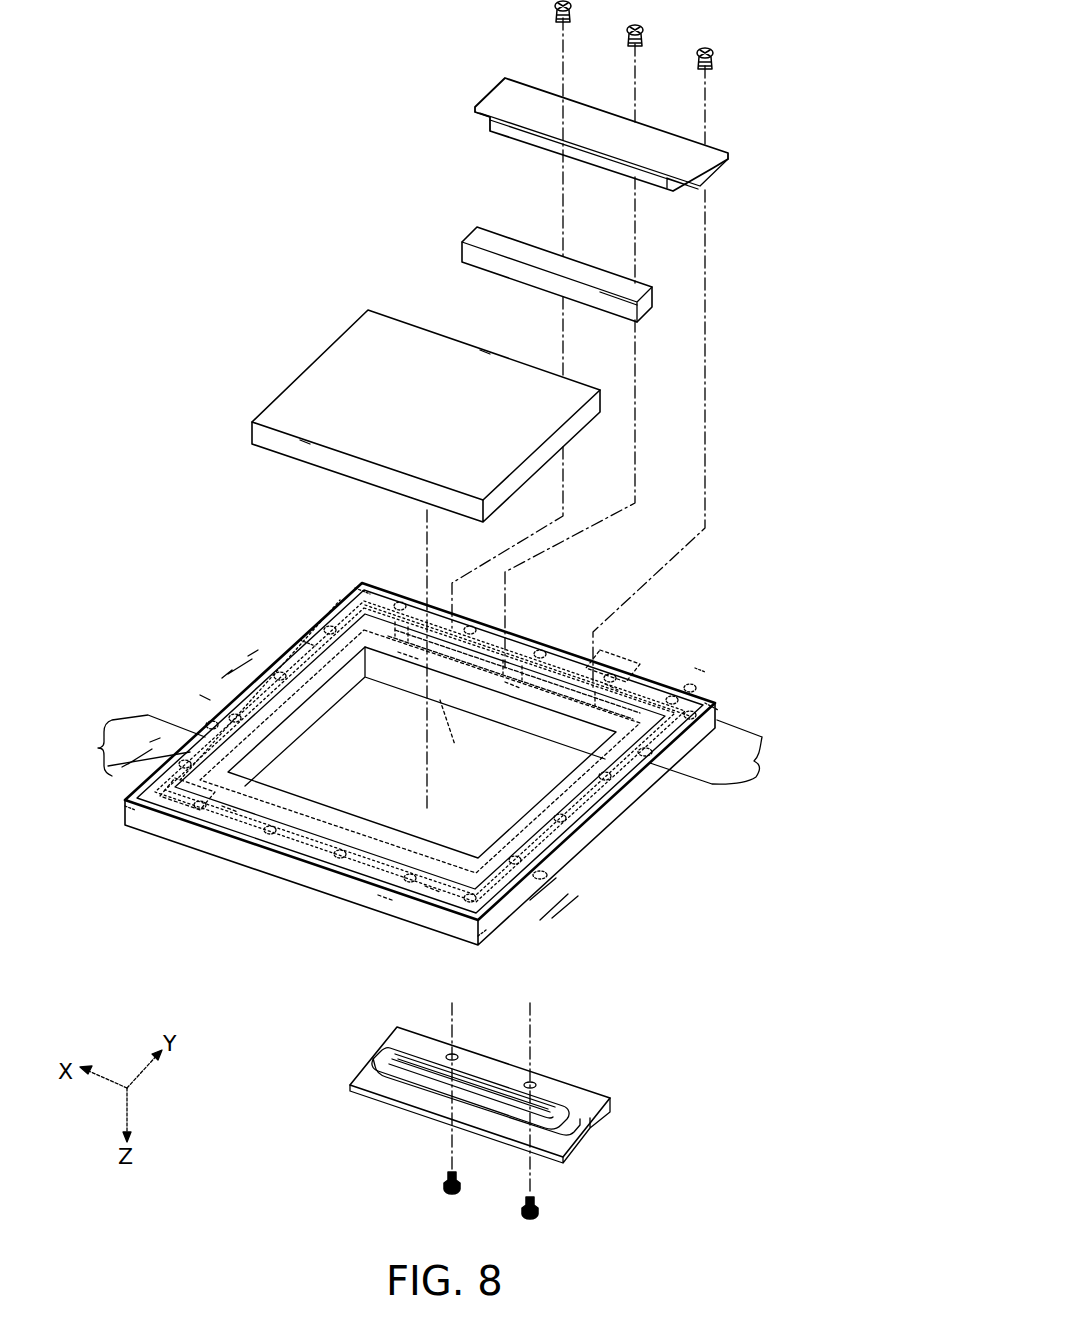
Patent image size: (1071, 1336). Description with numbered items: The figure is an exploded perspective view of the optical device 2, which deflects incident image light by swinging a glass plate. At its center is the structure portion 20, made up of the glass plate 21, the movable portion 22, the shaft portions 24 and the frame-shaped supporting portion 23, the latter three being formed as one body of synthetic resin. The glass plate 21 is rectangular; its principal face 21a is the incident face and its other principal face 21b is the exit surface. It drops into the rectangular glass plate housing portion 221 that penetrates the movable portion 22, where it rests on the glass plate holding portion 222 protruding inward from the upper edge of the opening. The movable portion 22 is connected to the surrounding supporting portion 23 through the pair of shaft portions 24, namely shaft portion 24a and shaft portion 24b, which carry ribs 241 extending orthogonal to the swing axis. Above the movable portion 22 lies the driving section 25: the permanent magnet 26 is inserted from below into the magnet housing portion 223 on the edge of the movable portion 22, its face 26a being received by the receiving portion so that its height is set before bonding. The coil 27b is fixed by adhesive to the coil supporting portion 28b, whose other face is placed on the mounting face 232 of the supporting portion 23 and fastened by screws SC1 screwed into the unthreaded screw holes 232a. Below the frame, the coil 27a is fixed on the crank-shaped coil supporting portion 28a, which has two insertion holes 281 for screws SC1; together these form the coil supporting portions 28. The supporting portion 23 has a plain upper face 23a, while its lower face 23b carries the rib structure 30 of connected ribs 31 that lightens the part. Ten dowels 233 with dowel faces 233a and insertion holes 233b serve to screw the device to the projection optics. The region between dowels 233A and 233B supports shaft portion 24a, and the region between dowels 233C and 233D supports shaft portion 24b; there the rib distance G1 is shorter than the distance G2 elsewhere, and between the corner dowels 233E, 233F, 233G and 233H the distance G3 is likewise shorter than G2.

The optical device 2 is at (219, 202).
The structure portion 20 is at (171, 622).
The glass plate 21 is at (408, 342).
The principal face 21a is at (304, 470).
The principal face 21b is at (472, 358).
The movable portion 22 is at (352, 596).
The supporting portion 23 is at (278, 659).
The +Z axis side face 23a is at (168, 842).
The −Z axis side face 23b is at (200, 694).
The shaft portions 24 is at (622, 648).
The shaft portion 24a is at (665, 625).
The shaft portion 24b is at (186, 790).
The driving section 25 is at (683, 254).
The permanent magnet 26 is at (521, 242).
The one face of the permanent magnet 26a is at (612, 316).
The coil 27a is at (388, 1054).
The coil 27b is at (490, 116).
The coil supporting portions 28 is at (571, 134).
The coil supporting portion 28a is at (408, 1038).
The coil supporting portion 28b is at (505, 82).
The rib structure 30 is at (384, 900).
The ribs 31 is at (431, 892).
The glass plate housing portion 221 is at (440, 695).
The glass plate holding portion 222 is at (462, 734).
The magnet housing portion 223 is at (420, 654).
The mounting face 232 is at (540, 650).
The screw holes 232a is at (511, 692).
The dowels 233 is at (782, 669).
The dowel 233A is at (720, 696).
The dowel 233B is at (648, 758).
The dowel 233C is at (125, 816).
The dowel 233D is at (210, 720).
The dowel 233E is at (550, 880).
The dowel 233F is at (488, 934).
The dowel 233G is at (360, 581).
The dowel 233H is at (309, 634).
The dowel faces 233a is at (692, 682).
The insertion hole 233b is at (700, 664).
The ribs 241 is at (228, 810).
The insertion holes 281 is at (530, 1082).
The screw SC1 is at (573, 4).
The distance between the ribs G1 is at (132, 752).
The distance between the ribs G2 is at (229, 662).
The distance between the ribs G3 is at (566, 901).